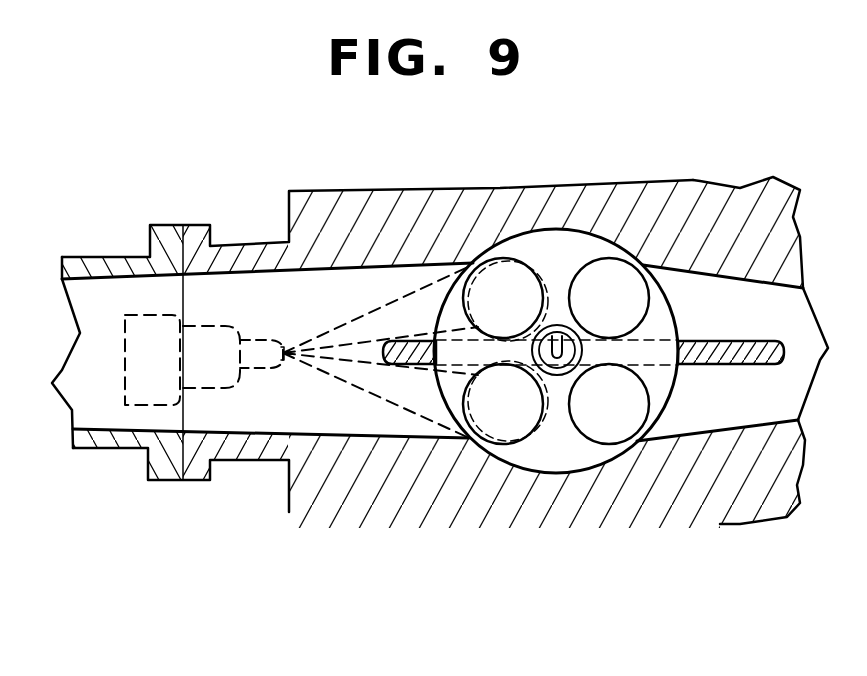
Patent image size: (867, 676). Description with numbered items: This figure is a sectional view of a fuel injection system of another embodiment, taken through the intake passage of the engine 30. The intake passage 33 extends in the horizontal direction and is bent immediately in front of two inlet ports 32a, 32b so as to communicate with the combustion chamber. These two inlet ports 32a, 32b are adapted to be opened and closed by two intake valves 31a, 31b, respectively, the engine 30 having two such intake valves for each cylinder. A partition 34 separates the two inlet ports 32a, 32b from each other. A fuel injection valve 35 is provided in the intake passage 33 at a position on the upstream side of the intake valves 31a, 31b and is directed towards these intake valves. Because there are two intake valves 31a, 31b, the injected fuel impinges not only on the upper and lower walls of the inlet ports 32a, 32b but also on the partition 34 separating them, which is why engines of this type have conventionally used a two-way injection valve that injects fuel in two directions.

The engine 30 is at (640, 455).
The intake valve 31a is at (524, 248).
The inlet port 32a is at (498, 290).
The intake valve 31b is at (462, 451).
The inlet port 32b is at (497, 413).
The intake passage 33 is at (262, 410).
The partition 34 is at (408, 343).
The fuel injection valve 35 is at (152, 404).